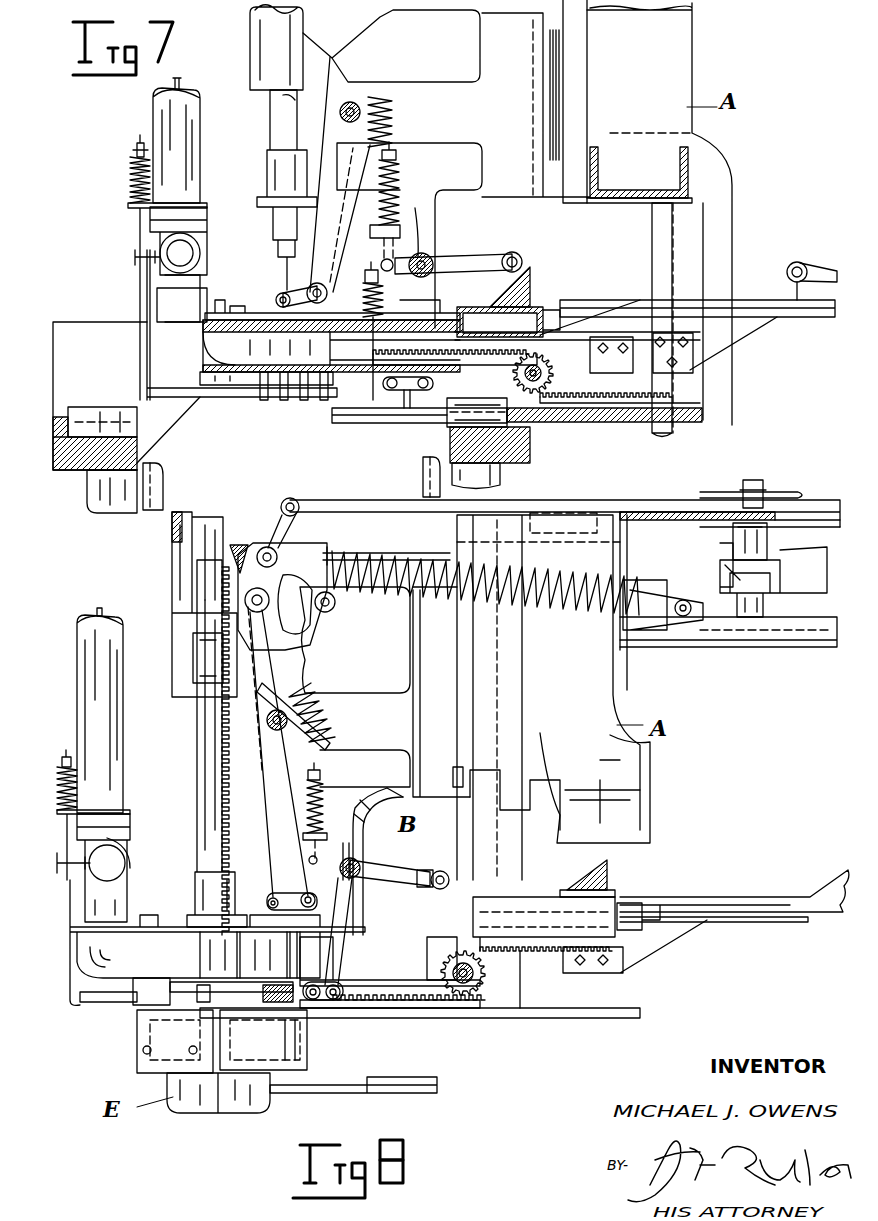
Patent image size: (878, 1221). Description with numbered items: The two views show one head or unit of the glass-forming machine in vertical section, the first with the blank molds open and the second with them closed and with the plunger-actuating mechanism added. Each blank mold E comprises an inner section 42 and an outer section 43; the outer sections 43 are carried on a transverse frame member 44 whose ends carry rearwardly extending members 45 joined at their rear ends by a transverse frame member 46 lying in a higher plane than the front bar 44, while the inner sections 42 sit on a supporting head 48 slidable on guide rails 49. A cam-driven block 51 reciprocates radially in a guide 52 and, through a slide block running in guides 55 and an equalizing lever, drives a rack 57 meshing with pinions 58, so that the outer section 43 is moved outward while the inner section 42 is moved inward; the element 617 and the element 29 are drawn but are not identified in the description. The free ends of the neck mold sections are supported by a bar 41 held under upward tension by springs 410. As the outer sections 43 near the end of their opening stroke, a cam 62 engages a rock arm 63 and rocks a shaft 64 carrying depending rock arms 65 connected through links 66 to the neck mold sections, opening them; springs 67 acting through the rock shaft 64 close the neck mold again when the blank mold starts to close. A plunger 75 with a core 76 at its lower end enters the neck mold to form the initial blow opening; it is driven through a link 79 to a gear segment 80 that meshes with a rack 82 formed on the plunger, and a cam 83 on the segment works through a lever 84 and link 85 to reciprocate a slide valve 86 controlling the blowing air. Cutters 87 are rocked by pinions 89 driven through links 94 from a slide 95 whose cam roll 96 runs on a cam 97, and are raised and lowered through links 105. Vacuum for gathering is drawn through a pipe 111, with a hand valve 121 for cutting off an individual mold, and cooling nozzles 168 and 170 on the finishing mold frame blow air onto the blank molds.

In FIG. 7, the pipe 111 is at (183, 115).
In FIG. 8, the pipe 111 is at (93, 689).
In FIG. 7, the springs 410 is at (130, 180).
In FIG. 8, the springs 410 is at (57, 765).
In FIG. 7, the plunger 75 is at (283, 122).
In FIG. 8, the plunger 75 is at (200, 836).
In FIG. 7, the core 76 is at (290, 273).
In FIG. 7, the rearwardly extending members 45 is at (240, 317).
In FIG. 7, the bar 41 is at (243, 395).
In FIG. 8, the bar 41 is at (103, 1002).
In FIG. 7, the transverse frame member 44 is at (77, 463).
In FIG. 8, the transverse frame member 44 is at (137, 1059).
In FIG. 7, the outer section 43 is at (123, 503).
In FIG. 7, the cooling nozzle 170 is at (157, 483).
In FIG. 7, the channel 29 is at (655, 178).
In FIG. 7, the springs 67 is at (397, 188).
In FIG. 8, the springs 67 is at (325, 792).
In FIG. 7, the rock shaft 64 is at (416, 224).
In FIG. 8, the rock shaft 64 is at (347, 840).
In FIG. 7, the rock arm 63 is at (455, 256).
In FIG. 8, the rock arm 63 is at (400, 874).
In FIG. 7, the cam 62 is at (500, 297).
In FIG. 8, the cam 62 is at (578, 880).
In FIG. 7, the transverse frame member 46 is at (540, 313).
In FIG. 7, the rack 57 is at (480, 354).
In FIG. 8, the rack 57 is at (540, 951).
In FIG. 7, the pinions 58 is at (553, 368).
In FIG. 8, the pinions 58 is at (485, 982).
In FIG. 7, the rack bar 617 is at (553, 380).
In FIG. 7, the rock arms 65 is at (430, 386).
In FIG. 8, the rock arms 65 is at (335, 958).
In FIG. 7, the links 66 is at (407, 408).
In FIG. 7, the guide rails 49 is at (387, 423).
In FIG. 8, the guide rails 49 is at (520, 1018).
In FIG. 7, the supporting head 48 is at (587, 422).
In FIG. 8, the supporting head 48 is at (420, 1015).
In FIG. 7, the inner section 42 is at (495, 478).
In FIG. 7, the cooling nozzle 168 is at (423, 470).
In FIG. 7, the guides 55 is at (803, 317).
In FIG. 8, the guides 55 is at (755, 897).
In FIG. 8, the links 105 is at (336, 500).
In FIG. 8, the slide 95 is at (677, 512).
In FIG. 8, the pinions 89 is at (237, 547).
In FIG. 8, the gear segment 80 is at (245, 552).
In FIG. 8, the links 94 is at (395, 555).
In FIG. 8, the link 79 is at (450, 558).
In FIG. 8, the cam roll 96 is at (733, 543).
In FIG. 8, the cam 97 is at (720, 575).
In FIG. 8, the guide 52 is at (760, 647).
In FIG. 8, the cam 83 is at (315, 652).
In FIG. 8, the rack 82 is at (222, 733).
In FIG. 8, the lever 84 is at (300, 800).
In FIG. 8, the hand valves 121 is at (55, 862).
In FIG. 8, the link 85 is at (290, 897).
In FIG. 8, the slide valve 86 is at (333, 911).
In FIG. 8, the block 51 is at (370, 1008).
In FIG. 8, the cutters 87 is at (432, 1080).